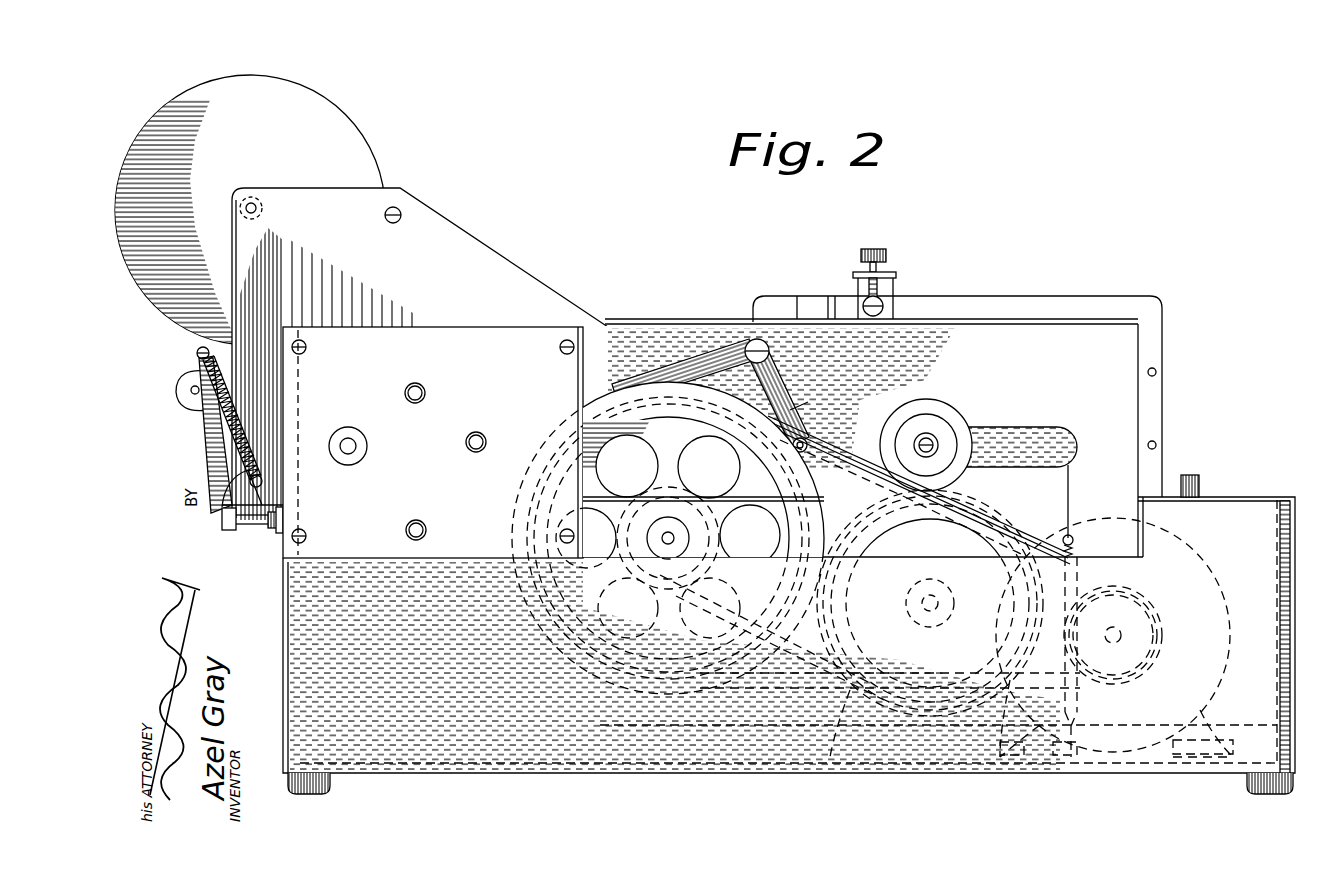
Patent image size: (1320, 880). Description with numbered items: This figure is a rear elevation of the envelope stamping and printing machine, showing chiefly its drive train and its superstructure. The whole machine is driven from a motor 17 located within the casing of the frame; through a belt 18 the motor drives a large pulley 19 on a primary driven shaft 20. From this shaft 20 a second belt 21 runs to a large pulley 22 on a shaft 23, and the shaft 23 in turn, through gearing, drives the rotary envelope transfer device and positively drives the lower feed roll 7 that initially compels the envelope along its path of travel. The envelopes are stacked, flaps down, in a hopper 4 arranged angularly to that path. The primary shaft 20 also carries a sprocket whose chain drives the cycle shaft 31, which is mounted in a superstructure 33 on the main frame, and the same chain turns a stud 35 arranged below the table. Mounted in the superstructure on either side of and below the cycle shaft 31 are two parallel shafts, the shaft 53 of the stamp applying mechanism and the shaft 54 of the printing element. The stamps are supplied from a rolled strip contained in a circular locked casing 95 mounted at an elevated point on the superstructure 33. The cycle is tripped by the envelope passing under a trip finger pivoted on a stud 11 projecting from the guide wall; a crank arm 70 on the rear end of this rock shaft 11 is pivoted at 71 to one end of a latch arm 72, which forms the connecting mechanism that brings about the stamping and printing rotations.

The circular locked casing 95 is at (371, 164).
The superstructure 33 is at (452, 236).
The hopper 4 is at (1040, 301).
The latch arm 72 is at (716, 358).
The pivot 71 is at (753, 342).
The crank arm 70 is at (793, 422).
The stud 11 is at (808, 441).
The belt 18 is at (849, 448).
The large pulley 19 is at (796, 479).
The shaft 31 is at (421, 390).
The shaft 54 is at (352, 448).
The shaft 53 is at (482, 443).
The stud 35 is at (423, 531).
The feed roll 7 is at (1236, 518).
The primary driven shaft 20 is at (675, 538).
The belt 21 is at (861, 497).
The large pulley 22 is at (958, 521).
The shaft 23 is at (928, 610).
The motor 17 is at (1117, 540).